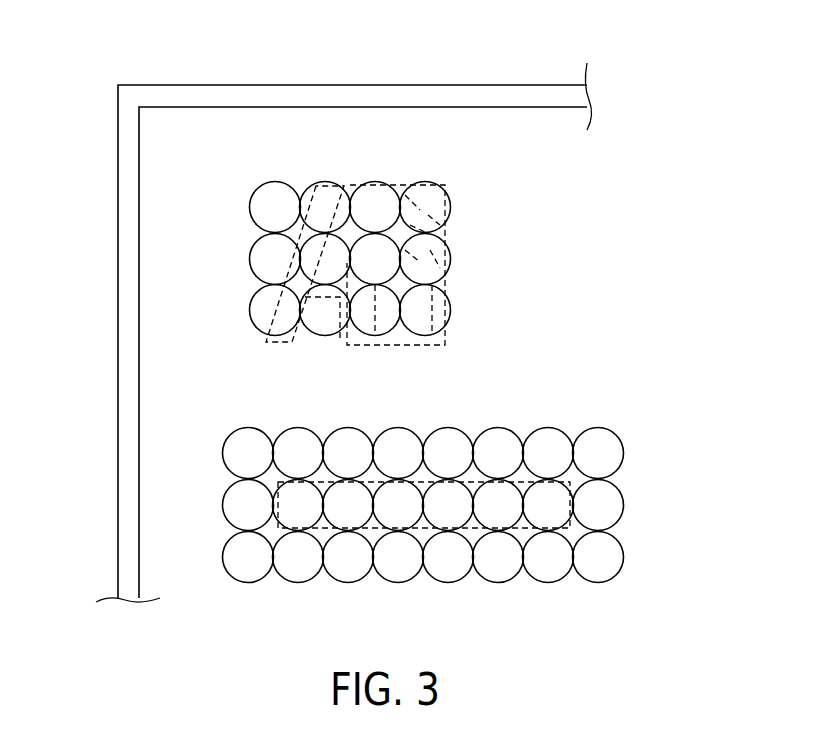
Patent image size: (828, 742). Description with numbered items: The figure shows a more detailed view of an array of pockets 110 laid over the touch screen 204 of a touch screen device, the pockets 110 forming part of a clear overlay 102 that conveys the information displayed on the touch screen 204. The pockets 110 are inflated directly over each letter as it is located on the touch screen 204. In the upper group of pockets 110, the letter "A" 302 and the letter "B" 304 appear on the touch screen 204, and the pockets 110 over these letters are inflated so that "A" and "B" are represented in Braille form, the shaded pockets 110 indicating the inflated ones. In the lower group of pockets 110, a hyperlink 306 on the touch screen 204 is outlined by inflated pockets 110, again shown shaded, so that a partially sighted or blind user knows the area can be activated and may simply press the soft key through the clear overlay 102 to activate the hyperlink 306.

The clear overlay 102 is at (545, 117).
The touch screen 204 is at (174, 98).
The pockets 110 is at (250, 202).
The letter "A" 302 is at (277, 340).
The letter "B" 304 is at (405, 185).
The hyperlink 306 is at (565, 505).